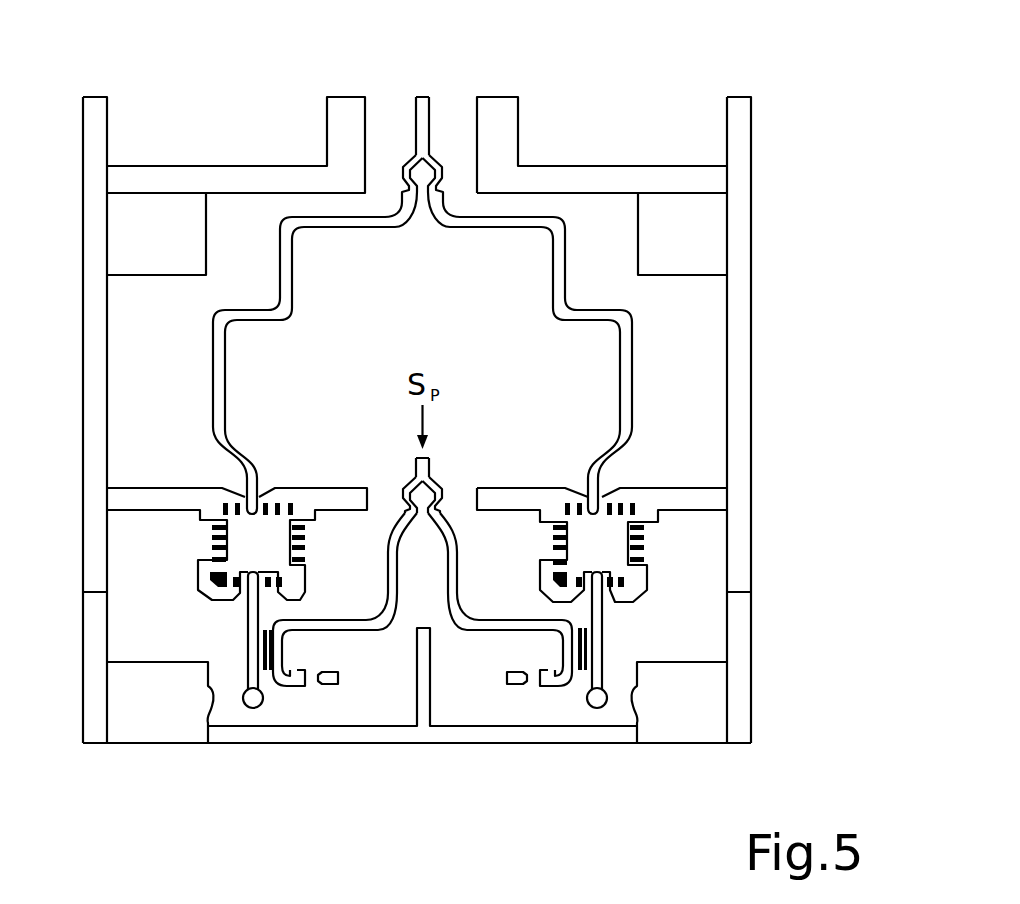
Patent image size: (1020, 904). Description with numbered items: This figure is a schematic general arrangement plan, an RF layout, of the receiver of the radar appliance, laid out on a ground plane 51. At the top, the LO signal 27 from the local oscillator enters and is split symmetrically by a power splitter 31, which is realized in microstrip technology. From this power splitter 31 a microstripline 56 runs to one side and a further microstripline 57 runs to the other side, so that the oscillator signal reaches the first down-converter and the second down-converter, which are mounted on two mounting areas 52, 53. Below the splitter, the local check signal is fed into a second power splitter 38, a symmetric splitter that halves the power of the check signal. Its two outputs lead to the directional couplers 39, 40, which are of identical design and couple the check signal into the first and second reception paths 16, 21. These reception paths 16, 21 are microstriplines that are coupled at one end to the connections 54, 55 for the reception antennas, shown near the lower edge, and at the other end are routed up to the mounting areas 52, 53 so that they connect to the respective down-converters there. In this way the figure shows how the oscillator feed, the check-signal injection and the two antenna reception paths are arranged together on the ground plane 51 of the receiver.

The LO signal 27 is at (422, 82).
The power splitter 31 is at (425, 207).
The further microstripline 57 is at (223, 352).
The microstripline 56 is at (575, 320).
The ground plane 51 is at (740, 402).
The power splitter 38 is at (437, 483).
The directional coupler 40 is at (287, 645).
The directional coupler 39 is at (562, 652).
The mounting area 53 is at (247, 543).
The mounting area 52 is at (587, 540).
The second reception path 21 is at (250, 633).
The first reception path 16 is at (602, 633).
The connection 55 is at (253, 703).
The connection 54 is at (597, 703).